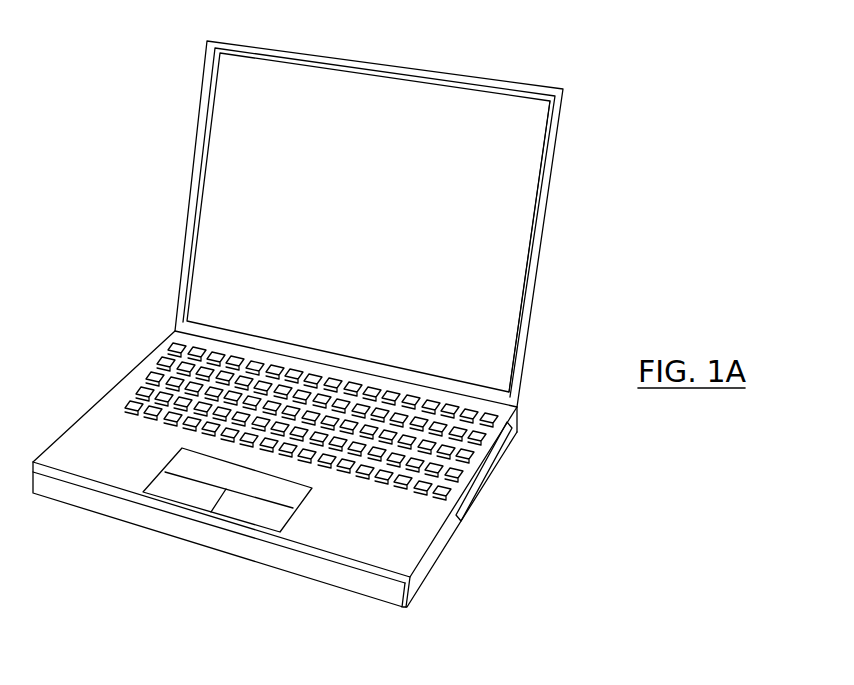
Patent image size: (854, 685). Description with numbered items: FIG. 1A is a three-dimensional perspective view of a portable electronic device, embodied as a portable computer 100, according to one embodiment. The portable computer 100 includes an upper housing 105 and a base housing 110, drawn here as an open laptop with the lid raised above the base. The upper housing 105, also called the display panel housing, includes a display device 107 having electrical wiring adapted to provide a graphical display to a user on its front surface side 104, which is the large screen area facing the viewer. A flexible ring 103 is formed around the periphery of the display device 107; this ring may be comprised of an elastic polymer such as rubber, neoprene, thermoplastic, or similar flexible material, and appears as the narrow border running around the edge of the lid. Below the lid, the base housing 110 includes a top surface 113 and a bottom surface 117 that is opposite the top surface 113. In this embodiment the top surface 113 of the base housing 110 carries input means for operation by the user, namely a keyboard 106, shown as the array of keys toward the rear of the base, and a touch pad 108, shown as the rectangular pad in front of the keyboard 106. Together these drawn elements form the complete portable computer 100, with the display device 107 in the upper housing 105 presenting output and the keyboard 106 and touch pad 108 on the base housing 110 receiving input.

The portable computer 100 is at (589, 77).
The flexible ring 103 is at (542, 225).
The front surface side 104 is at (229, 245).
The upper housing 105 is at (195, 138).
The keyboard 106 is at (134, 369).
The display device 107 is at (488, 292).
The touch pad 108 is at (172, 457).
The base housing 110 is at (440, 555).
The top surface 113 is at (313, 527).
The bottom surface 117 is at (190, 572).